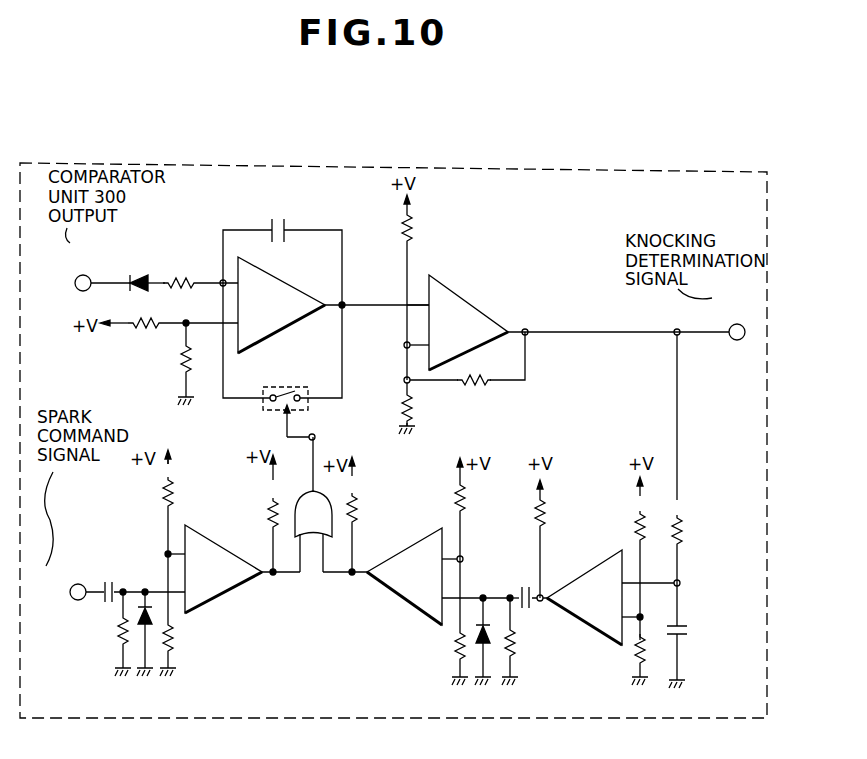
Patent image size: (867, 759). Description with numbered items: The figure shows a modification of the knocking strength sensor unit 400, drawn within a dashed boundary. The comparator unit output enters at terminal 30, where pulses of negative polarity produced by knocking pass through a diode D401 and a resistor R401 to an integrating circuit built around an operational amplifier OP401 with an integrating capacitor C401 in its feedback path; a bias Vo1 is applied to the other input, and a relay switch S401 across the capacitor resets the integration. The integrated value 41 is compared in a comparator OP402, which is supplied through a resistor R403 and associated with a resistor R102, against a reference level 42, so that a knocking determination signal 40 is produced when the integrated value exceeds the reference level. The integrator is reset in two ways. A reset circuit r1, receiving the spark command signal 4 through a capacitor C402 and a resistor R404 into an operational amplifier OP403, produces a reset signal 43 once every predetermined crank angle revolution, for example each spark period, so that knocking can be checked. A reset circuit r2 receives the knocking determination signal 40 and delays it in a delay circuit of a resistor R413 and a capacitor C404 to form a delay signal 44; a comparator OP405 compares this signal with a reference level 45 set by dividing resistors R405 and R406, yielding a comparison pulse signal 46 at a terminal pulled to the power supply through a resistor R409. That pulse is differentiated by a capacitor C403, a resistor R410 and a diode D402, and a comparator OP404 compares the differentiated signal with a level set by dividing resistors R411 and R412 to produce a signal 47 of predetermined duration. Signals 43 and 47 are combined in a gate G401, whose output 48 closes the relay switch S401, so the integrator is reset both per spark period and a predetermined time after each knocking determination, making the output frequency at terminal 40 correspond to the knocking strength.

The knocking strength sensor unit 400 is at (563, 164).
The terminal 30 is at (83, 275).
The knocking determination signal 40 is at (732, 323).
The spark command signal 4 is at (70, 588).
The integrated value 41 is at (340, 302).
The reference level 42 is at (405, 343).
The reset signal 43 is at (273, 577).
The delay signal 44 is at (680, 583).
The reference level 45 is at (655, 612).
The comparison pulse signal 46 is at (541, 602).
The signal of predetermined time duration 47 is at (353, 578).
The switch control signal 48 is at (315, 436).
The reset circuit r1 is at (142, 533).
The reset circuit r2 is at (577, 445).
The diode D401 is at (138, 275).
The resistor R401 is at (180, 274).
The capacitor C401 is at (280, 218).
The operational amplifier OP401 is at (306, 321).
The relay switch S401 is at (285, 386).
The bias voltage Vo1 is at (195, 311).
The resistor R403 is at (412, 224).
The comparator OP402 is at (478, 288).
The resistor R102 is at (410, 394).
The resistor R413 is at (683, 528).
The capacitor C404 is at (690, 630).
The comparator OP405 is at (580, 574).
The dividing resistor R405 is at (638, 531).
The dividing resistor R406 is at (637, 651).
The resistor R409 is at (546, 518).
The capacitor C403 is at (525, 586).
The diode D402 is at (488, 652).
The resistor R410 is at (513, 636).
The dividing resistor R411 is at (465, 512).
The dividing resistor R412 is at (457, 645).
The comparator OP404 is at (398, 553).
The gate G401 is at (313, 536).
The operational amplifier OP403 is at (223, 575).
The capacitor C402 is at (108, 581).
The resistor R404 is at (118, 627).